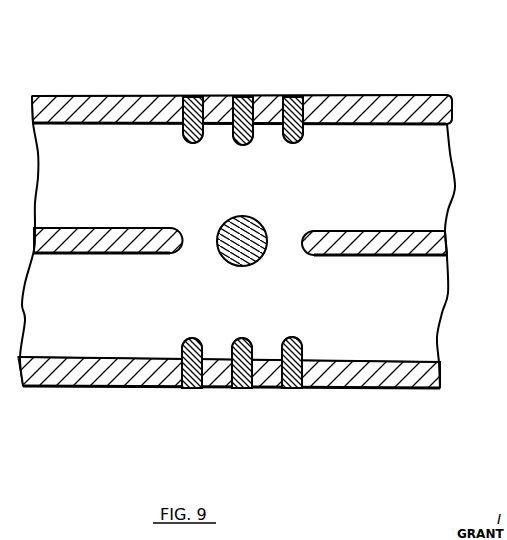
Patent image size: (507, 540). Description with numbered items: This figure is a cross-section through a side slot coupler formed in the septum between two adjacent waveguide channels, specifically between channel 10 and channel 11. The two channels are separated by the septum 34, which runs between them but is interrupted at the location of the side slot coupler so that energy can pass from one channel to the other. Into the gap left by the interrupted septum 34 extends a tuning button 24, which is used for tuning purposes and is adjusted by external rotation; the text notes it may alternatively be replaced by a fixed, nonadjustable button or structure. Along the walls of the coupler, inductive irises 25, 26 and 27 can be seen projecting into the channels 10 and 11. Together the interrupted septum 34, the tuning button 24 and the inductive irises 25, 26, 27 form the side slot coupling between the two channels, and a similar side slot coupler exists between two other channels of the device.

The channel 10 is at (397, 92).
The channel 11 is at (397, 395).
The tuning button 24 is at (252, 258).
The inductive iris 25 is at (190, 388).
The inductive iris 26 is at (238, 388).
The inductive iris 27 is at (291, 388).
The septum 34 is at (427, 227).